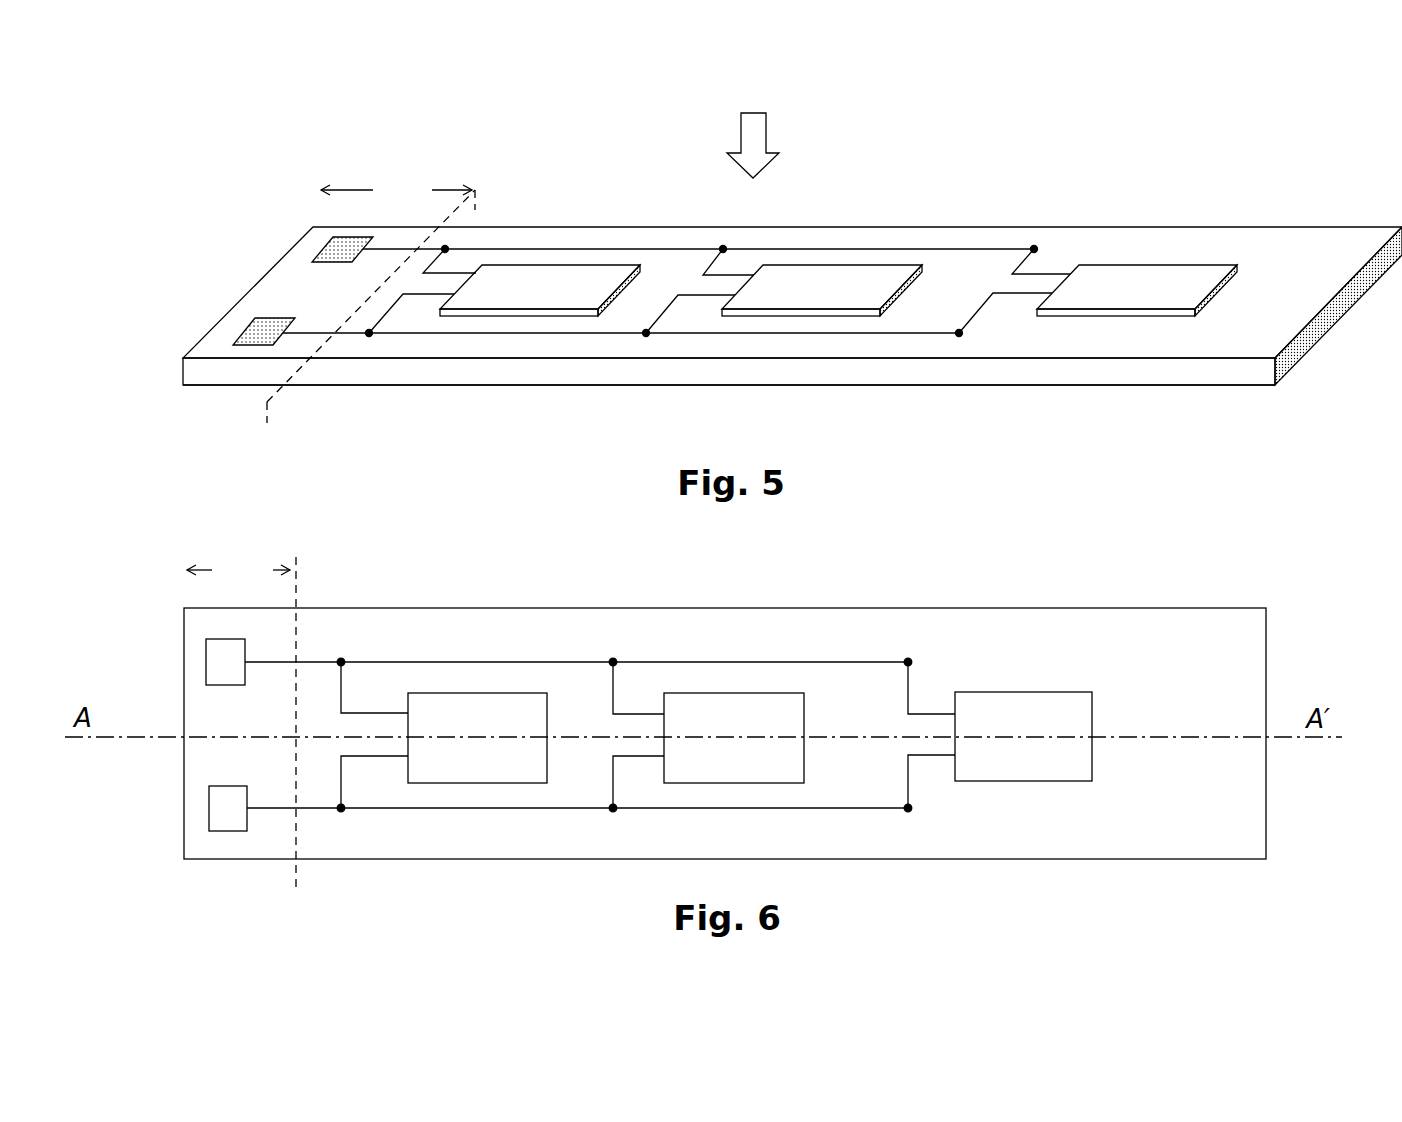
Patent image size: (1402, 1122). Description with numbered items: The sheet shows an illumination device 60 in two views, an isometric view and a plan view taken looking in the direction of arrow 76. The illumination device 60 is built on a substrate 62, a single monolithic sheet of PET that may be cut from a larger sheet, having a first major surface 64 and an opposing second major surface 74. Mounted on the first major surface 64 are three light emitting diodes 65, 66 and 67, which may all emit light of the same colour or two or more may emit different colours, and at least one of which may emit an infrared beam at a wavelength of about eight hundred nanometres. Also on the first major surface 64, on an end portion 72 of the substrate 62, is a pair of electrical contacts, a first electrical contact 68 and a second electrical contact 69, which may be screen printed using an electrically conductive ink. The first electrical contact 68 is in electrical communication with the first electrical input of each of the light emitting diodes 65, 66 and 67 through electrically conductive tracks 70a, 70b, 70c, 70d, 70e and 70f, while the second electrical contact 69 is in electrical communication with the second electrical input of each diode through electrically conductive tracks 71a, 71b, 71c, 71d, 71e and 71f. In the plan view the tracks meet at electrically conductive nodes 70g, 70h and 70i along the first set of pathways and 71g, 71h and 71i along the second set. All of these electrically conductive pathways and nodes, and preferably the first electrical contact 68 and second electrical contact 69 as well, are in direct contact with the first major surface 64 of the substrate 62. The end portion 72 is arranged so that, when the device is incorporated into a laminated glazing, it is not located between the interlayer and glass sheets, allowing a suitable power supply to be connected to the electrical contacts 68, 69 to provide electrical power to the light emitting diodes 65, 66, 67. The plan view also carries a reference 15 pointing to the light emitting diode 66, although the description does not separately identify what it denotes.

In FIG. 6, the sensor 15 is at (771, 728).
In FIG. 5, the illumination device 60 is at (1252, 112).
In FIG. 6, the illumination device 60 is at (1097, 575).
In FIG. 5, the substrate 62 is at (1305, 252).
In FIG. 6, the substrate 62 is at (1140, 635).
In FIG. 5, the first major surface 64 is at (1263, 246).
In FIG. 6, the first major surface 64 is at (827, 620).
In FIG. 5, the light emitting diode 65 is at (540, 290).
In FIG. 6, the light emitting diode 65 is at (477, 738).
In FIG. 5, the light emitting diode 66 is at (822, 290).
In FIG. 6, the light emitting diode 66 is at (734, 738).
In FIG. 5, the light emitting diode 67 is at (1137, 290).
In FIG. 6, the light emitting diode 67 is at (1023, 736).
In FIG. 5, the first electrical contact 68 is at (267, 329).
In FIG. 6, the first electrical contact 68 is at (225, 812).
In FIG. 5, the second electrical contact 69 is at (337, 245).
In FIG. 6, the second electrical contact 69 is at (217, 657).
In FIG. 5, the electrically conductive track 70a is at (328, 324).
In FIG. 6, the electrically conductive track 70a is at (294, 796).
In FIG. 5, the electrically conductive track 70b is at (411, 313).
In FIG. 6, the electrically conductive track 70b is at (374, 782).
In FIG. 5, the electrically conductive track 70c is at (509, 344).
In FIG. 6, the electrically conductive track 70c is at (477, 825).
In FIG. 5, the electrically conductive track 70d is at (690, 314).
In FIG. 6, the electrically conductive track 70d is at (638, 782).
In FIG. 5, the electrically conductive track 70e is at (804, 343).
In FIG. 6, the electrically conductive track 70e is at (760, 827).
In FIG. 5, the electrically conductive track 70f is at (1005, 313).
In FIG. 6, the electrically conductive track 70f is at (931, 781).
In FIG. 6, the electrically conductive node 70g is at (343, 823).
In FIG. 6, the electrically conductive node 70h is at (617, 823).
In FIG. 6, the electrically conductive node 70i is at (904, 824).
In FIG. 5, the electrically conductive track 71a is at (406, 241).
In FIG. 6, the electrically conductive track 71a is at (292, 649).
In FIG. 5, the electrically conductive track 71b is at (449, 262).
In FIG. 6, the electrically conductive track 71b is at (374, 687).
In FIG. 5, the electrically conductive track 71c is at (586, 241).
In FIG. 6, the electrically conductive track 71c is at (477, 646).
In FIG. 5, the electrically conductive track 71d is at (728, 262).
In FIG. 6, the electrically conductive track 71d is at (638, 688).
In FIG. 5, the electrically conductive track 71e is at (880, 241).
In FIG. 6, the electrically conductive track 71e is at (760, 646).
In FIG. 5, the electrically conductive track 71f is at (1041, 261).
In FIG. 6, the electrically conductive track 71f is at (931, 688).
In FIG. 6, the electrically conductive node 71g is at (343, 648).
In FIG. 6, the electrically conductive node 71h is at (617, 648).
In FIG. 6, the electrically conductive node 71i is at (904, 648).
In FIG. 5, the end portion 72 is at (371, 301).
In FIG. 6, the end portion 72 is at (241, 723).
In FIG. 5, the second major surface 74 is at (1022, 392).
In FIG. 5, the arrow 76 is at (757, 133).